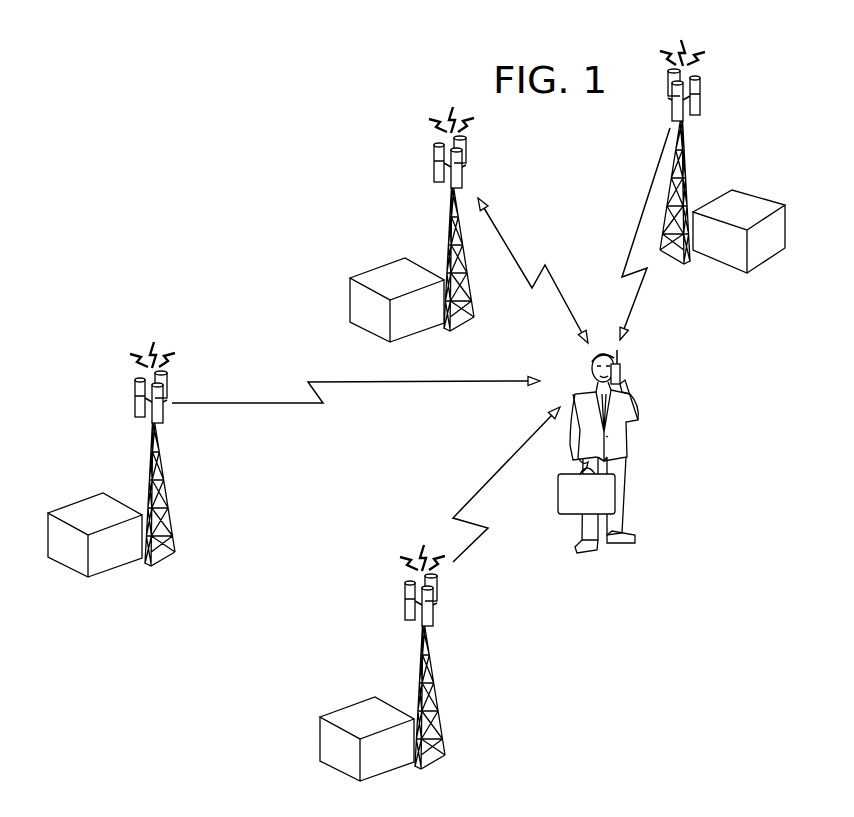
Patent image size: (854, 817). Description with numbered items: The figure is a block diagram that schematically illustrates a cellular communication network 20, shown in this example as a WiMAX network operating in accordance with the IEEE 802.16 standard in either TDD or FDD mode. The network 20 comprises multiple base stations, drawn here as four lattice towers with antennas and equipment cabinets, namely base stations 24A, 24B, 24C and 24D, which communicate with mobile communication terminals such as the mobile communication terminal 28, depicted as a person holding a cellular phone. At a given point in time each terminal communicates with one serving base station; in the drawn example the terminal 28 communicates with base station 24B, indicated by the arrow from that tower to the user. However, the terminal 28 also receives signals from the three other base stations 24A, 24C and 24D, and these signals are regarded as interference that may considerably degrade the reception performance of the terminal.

The cellular communication network 20 is at (265, 170).
The base station 24A is at (87, 508).
The base station 24B is at (390, 275).
The base station 24C is at (743, 207).
The base station 24D is at (360, 713).
The mobile communication terminal 28 is at (618, 363).